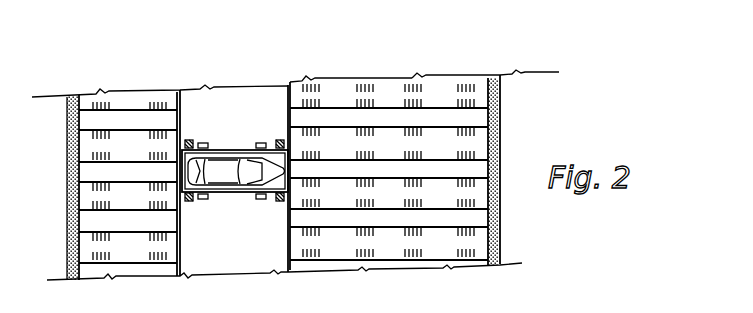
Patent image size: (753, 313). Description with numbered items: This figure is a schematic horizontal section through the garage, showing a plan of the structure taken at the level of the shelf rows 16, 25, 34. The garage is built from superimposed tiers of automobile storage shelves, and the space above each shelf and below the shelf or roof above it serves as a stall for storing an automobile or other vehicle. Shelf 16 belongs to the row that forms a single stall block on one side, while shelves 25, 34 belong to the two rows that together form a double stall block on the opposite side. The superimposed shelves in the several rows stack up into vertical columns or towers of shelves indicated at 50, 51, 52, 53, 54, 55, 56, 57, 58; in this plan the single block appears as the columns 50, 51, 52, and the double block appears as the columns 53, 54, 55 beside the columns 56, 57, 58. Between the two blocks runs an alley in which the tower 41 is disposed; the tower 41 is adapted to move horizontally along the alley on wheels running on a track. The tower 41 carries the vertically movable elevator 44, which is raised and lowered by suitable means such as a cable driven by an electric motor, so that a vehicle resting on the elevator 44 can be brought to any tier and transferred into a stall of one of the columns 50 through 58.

The storage shelf 16 is at (131, 81).
The storage shelf 25 is at (338, 73).
The storage shelf 34 is at (449, 70).
The tower 41 is at (188, 201).
The elevator 44 is at (236, 196).
The column of shelves 50 is at (128, 120).
The column of shelves 51 is at (128, 171).
The column of shelves 52 is at (128, 232).
The column of shelves 53 is at (389, 110).
The column of shelves 54 is at (389, 169).
The column of shelves 55 is at (389, 229).
The column of shelves 56 is at (439, 110).
The column of shelves 57 is at (439, 169).
The column of shelves 58 is at (439, 228).